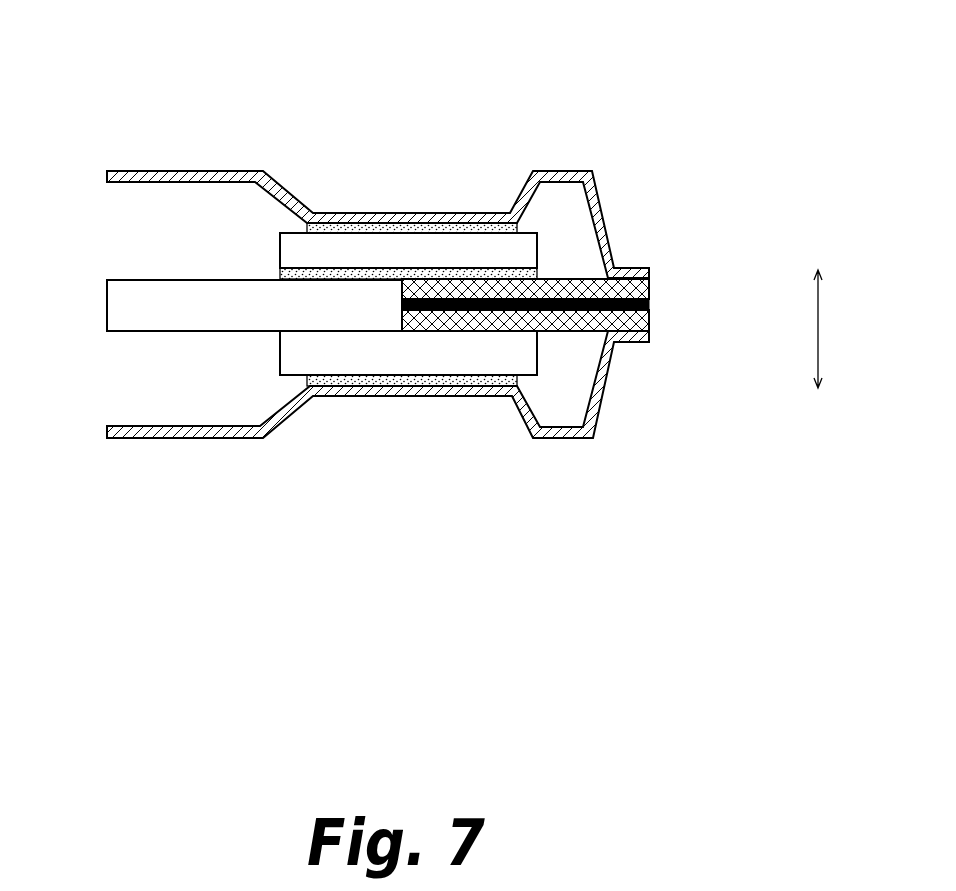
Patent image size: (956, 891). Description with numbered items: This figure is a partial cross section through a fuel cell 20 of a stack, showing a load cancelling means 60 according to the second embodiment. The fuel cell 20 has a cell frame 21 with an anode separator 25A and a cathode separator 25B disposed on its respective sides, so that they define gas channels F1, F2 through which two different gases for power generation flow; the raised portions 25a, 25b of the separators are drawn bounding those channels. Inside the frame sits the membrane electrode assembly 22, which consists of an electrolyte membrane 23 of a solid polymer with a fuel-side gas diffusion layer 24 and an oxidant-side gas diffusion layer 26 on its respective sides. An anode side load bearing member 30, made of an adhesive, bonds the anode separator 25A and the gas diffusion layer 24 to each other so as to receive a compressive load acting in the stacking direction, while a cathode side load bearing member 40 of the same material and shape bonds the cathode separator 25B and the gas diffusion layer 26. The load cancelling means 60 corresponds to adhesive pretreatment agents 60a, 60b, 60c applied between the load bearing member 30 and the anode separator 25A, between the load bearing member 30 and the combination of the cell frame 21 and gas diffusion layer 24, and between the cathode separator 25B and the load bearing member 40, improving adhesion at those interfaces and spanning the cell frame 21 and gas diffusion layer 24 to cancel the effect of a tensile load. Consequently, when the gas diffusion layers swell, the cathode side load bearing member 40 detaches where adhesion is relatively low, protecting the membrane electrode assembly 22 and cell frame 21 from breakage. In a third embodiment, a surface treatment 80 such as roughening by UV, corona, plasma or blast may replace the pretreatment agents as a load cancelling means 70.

The fuel cell 20 is at (442, 300).
The cell frame 21 is at (107, 309).
The membrane electrode assembly 22 is at (602, 335).
The electrolyte membrane 23 is at (650, 305).
The fuel-side gas diffusion layer 24 is at (650, 290).
The oxidant-side gas diffusion layer 26 is at (576, 355).
The anode separator 25A is at (393, 181).
The cathode separator 25B is at (381, 421).
The upper raised portion of shield 25a is at (606, 183).
The lower raised portion of shield 25b is at (568, 440).
The anode side load bearing member 30 is at (343, 247).
The cathode side load bearing member 40 is at (330, 362).
The load cancelling means 60 is at (468, 300).
The adhesive pretreatment agent 60a is at (404, 228).
The adhesive pretreatment agent 60b is at (458, 272).
The adhesive pretreatment agent 60c is at (407, 380).
The load cancelling means 70 is at (408, 304).
The surface treatment 80 is at (408, 327).
The gas channel F1 is at (568, 193).
The gas channel F2 is at (580, 377).